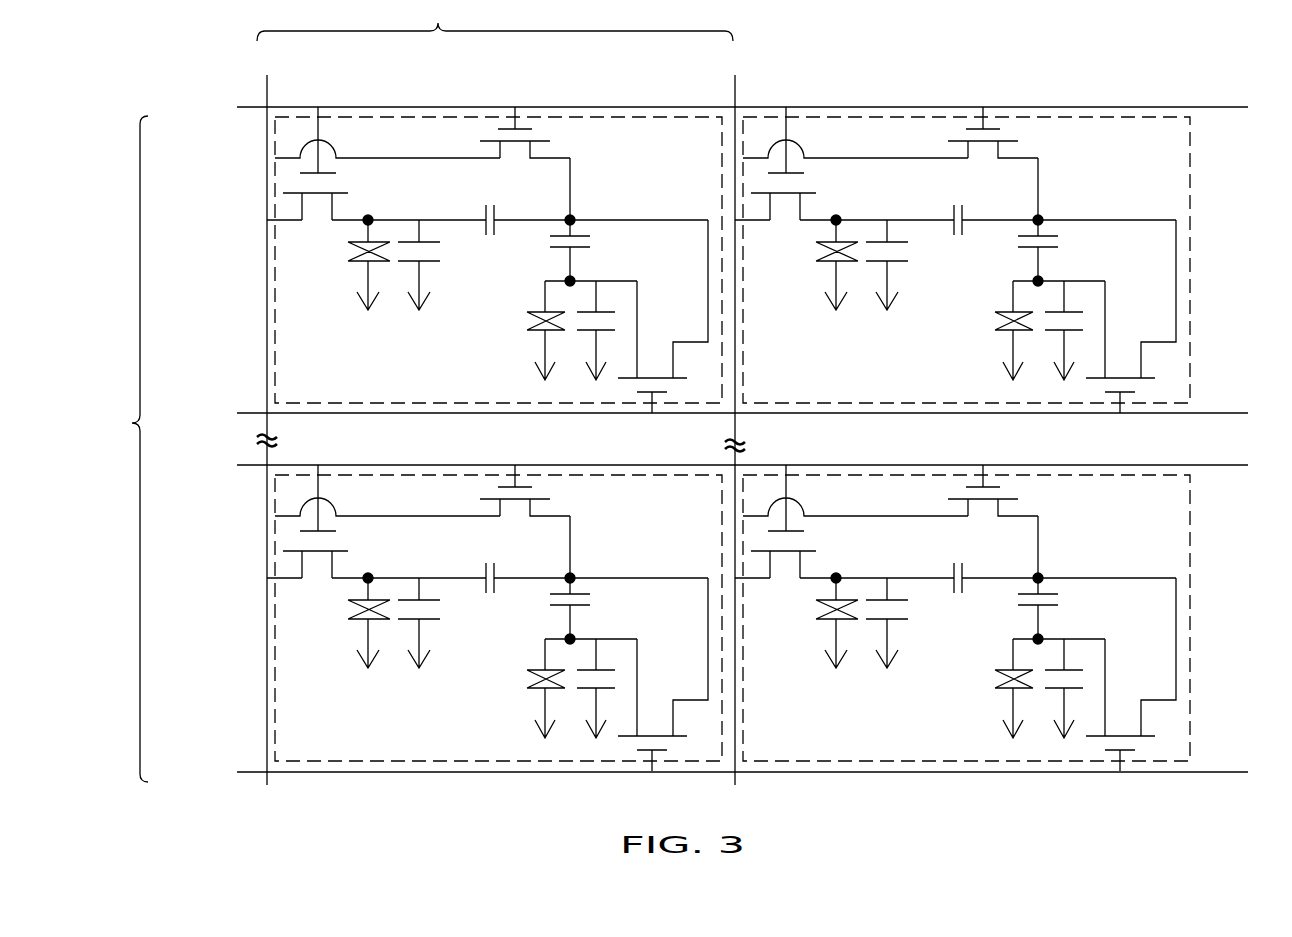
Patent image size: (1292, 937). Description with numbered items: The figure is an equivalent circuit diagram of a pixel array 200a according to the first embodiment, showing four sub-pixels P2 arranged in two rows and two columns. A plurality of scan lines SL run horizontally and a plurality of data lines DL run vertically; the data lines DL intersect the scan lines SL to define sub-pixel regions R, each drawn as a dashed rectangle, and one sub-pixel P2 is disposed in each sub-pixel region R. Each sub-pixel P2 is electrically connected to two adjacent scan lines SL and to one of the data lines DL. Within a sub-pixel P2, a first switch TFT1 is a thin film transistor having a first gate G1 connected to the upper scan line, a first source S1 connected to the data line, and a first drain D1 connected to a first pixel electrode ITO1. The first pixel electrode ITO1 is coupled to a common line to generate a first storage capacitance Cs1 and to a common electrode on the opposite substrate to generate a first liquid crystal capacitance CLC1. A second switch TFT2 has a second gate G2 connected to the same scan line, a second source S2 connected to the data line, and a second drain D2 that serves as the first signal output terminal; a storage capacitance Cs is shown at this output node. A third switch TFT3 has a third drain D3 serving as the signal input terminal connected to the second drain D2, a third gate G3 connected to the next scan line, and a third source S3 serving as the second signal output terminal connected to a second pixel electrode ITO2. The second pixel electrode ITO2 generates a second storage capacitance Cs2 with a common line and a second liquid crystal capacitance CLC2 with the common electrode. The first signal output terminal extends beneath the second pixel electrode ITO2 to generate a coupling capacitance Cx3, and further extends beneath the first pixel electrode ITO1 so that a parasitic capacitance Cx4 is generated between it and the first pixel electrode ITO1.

The pixel array 200a is at (1280, 819).
The scan lines SL is at (129, 449).
The data lines DL is at (495, 20).
The sub-pixel region R is at (266, 311).
The sub-pixel P2 is at (1222, 257).
The first gate G1 is at (554, 319).
The first source S1 is at (284, 220).
The first drain D1 is at (584, 386).
The first switch TFT1 is at (549, 402).
The first pixel electrode ITO1 is at (657, 387).
The first liquid crystal capacitance CLC1 is at (579, 444).
The first storage capacitance Cs1 is at (668, 444).
The parasitic capacitance Cx4 is at (758, 414).
The second gate G2 is at (514, 124).
The second source S2 is at (420, 158).
The second drain D2 is at (572, 172).
The second switch TFT2 is at (759, 343).
The storage capacitance Cs is at (870, 379).
The coupling capacitance Cx3 is at (790, 429).
The second pixel electrode ITO2 is at (825, 449).
The second liquid crystal capacitance CLC2 is at (758, 509).
The second storage capacitance Cs2 is at (822, 509).
The third source S3 is at (636, 374).
The third drain D3 is at (674, 366).
The third gate G3 is at (652, 408).
The third switch TFT3 is at (886, 553).